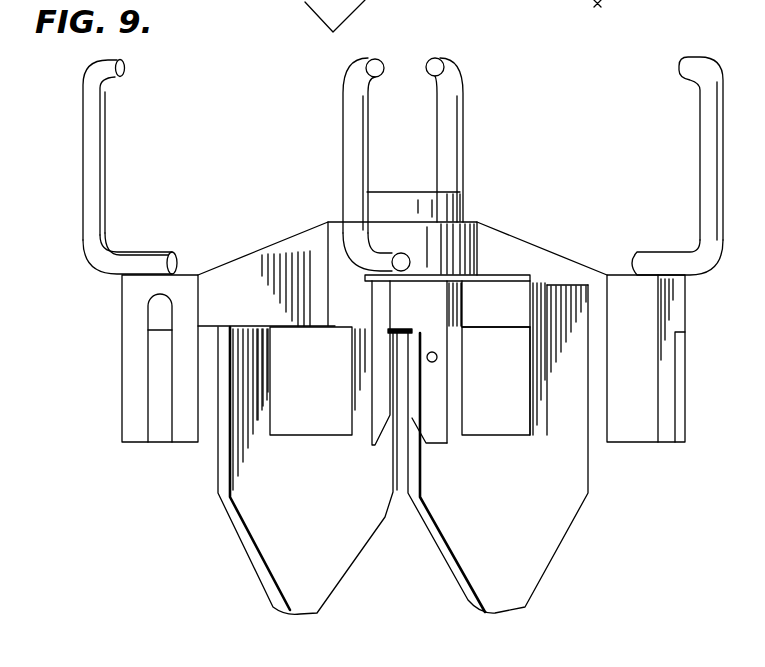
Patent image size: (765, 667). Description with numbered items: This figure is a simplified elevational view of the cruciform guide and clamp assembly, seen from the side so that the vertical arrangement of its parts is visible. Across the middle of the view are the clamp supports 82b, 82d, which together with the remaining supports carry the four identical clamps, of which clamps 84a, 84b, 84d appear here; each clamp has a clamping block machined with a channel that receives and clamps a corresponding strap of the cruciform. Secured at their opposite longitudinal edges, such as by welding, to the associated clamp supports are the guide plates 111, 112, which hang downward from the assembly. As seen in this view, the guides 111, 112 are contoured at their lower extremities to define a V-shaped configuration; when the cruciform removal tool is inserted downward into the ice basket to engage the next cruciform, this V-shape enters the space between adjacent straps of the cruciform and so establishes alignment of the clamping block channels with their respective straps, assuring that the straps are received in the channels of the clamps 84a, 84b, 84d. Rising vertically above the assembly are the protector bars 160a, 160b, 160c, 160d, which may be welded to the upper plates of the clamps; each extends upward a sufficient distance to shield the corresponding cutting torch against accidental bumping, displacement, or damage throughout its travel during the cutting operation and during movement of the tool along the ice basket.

The protector bar 160a is at (343, 128).
The protector bar 160b is at (707, 135).
The protector bar 160c is at (465, 129).
The protector bar 160d is at (104, 157).
The clamp 84a is at (422, 270).
The clamp 84b is at (620, 272).
The clamp 84d is at (191, 274).
The clamp support 82b is at (549, 262).
The clamp support 82d is at (290, 237).
The guide plate 111 is at (533, 543).
The guide plate 112 is at (327, 547).